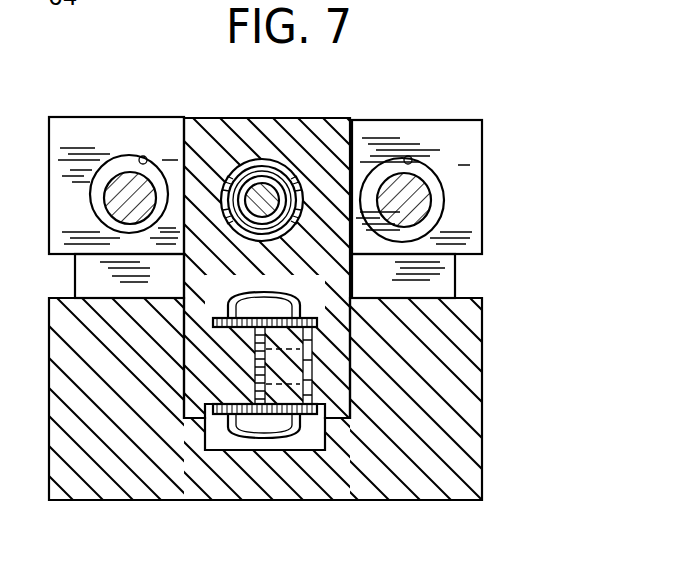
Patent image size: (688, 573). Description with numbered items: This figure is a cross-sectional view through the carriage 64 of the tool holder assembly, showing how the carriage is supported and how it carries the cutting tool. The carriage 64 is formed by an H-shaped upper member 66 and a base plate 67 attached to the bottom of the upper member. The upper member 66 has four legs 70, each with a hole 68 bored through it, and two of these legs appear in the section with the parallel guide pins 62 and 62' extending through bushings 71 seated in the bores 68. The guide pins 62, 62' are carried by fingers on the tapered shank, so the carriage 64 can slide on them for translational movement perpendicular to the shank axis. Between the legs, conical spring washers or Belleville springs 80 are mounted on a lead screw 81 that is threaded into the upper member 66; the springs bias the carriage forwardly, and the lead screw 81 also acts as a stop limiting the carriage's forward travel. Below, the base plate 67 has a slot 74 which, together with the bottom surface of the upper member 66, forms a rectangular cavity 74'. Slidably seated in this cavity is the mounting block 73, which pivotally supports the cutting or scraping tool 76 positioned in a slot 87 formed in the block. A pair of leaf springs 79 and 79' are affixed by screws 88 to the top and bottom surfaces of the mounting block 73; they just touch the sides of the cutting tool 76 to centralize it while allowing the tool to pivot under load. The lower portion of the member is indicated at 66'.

The carriage 64 is at (486, 286).
The upper member 66 is at (323, 244).
The center block lower portion 66' is at (376, 295).
The base plate 67 is at (490, 444).
The hole 68 is at (143, 156).
The legs 70 is at (62, 167).
The bushings 71 is at (130, 168).
The guide pin 62 is at (448, 200).
The guide pin 62' is at (79, 198).
The mounting block 73 is at (350, 365).
The slot 74 is at (152, 398).
The rectangular cavity 74' is at (358, 496).
The cutting tool 76 is at (350, 398).
The leaf spring 79 is at (266, 285).
The leaf spring 79' is at (260, 449).
The Belleville springs 80 is at (250, 170).
The lead screw 81 is at (267, 187).
The slot 87 is at (260, 348).
The screws 88 is at (245, 300).